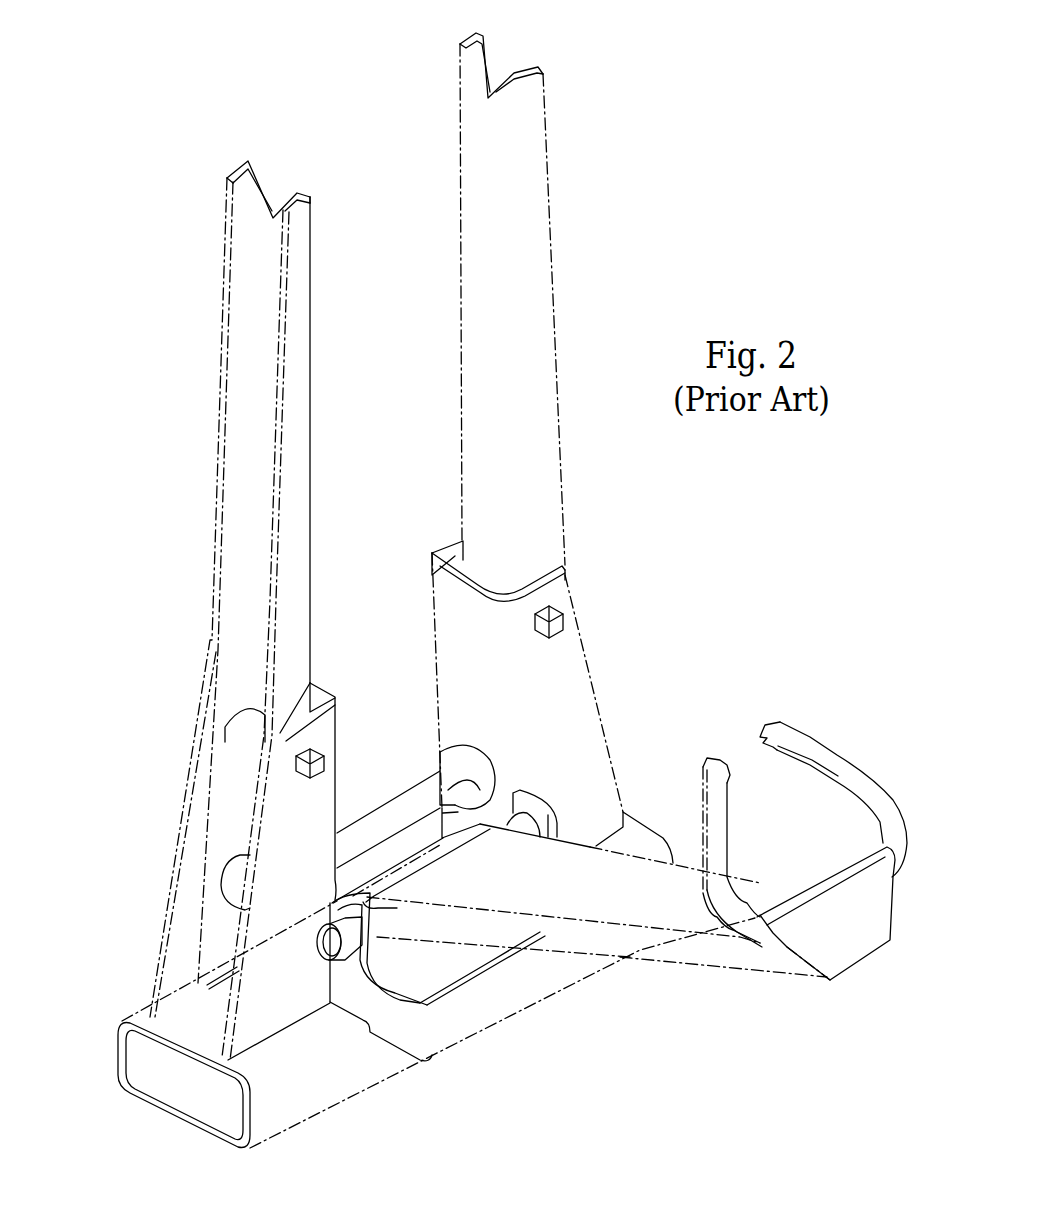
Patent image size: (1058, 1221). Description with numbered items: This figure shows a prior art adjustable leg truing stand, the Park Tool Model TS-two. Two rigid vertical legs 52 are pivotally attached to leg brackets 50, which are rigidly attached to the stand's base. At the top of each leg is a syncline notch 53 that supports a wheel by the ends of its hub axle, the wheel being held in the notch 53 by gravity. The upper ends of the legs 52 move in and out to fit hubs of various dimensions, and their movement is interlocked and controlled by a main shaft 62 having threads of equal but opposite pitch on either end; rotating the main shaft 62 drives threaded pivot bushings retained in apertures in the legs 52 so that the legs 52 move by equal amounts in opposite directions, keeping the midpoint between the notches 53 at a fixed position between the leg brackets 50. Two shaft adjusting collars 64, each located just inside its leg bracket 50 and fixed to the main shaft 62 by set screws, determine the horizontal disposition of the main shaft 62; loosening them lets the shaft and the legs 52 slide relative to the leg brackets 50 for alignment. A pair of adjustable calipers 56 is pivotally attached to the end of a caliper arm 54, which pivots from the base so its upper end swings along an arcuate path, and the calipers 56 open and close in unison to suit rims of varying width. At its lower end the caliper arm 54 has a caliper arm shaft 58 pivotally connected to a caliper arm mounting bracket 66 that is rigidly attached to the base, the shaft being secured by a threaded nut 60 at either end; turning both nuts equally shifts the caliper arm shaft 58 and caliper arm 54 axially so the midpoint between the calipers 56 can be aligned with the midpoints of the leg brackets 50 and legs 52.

The leg bracket 50 is at (182, 800).
The leg 52 is at (225, 293).
The syncline notch 53 is at (267, 188).
The caliper arm 54 is at (633, 958).
The adjustable caliper 56 is at (702, 893).
The caliper arm shaft 58 is at (377, 920).
The threaded nut 60 is at (353, 948).
The main shaft 62 is at (442, 792).
The shaft adjusting collar 64 is at (463, 760).
The caliper arm mounting bracket 66 is at (497, 985).